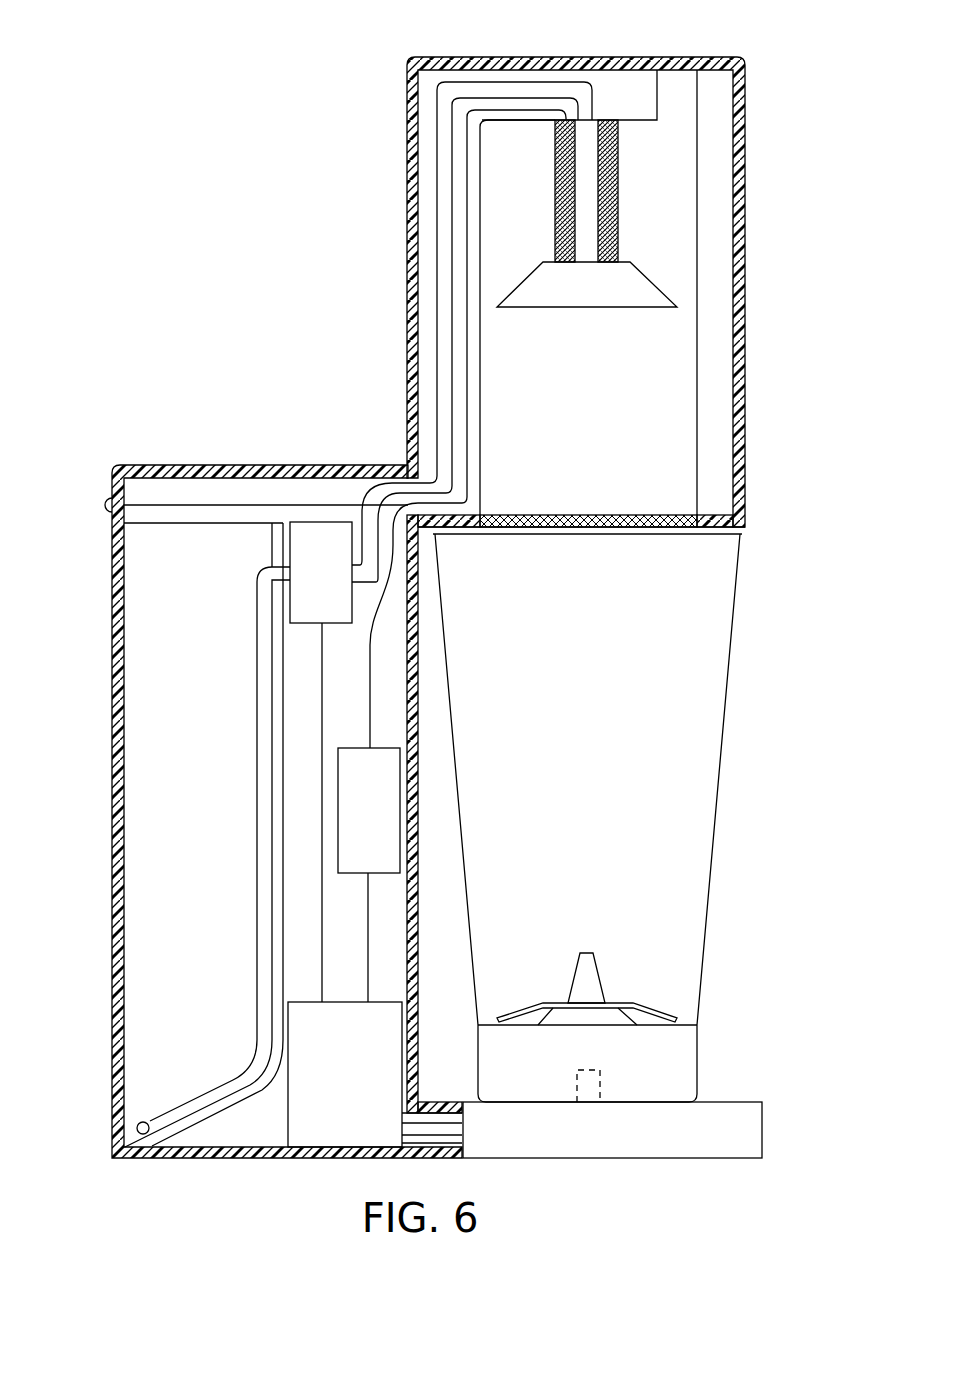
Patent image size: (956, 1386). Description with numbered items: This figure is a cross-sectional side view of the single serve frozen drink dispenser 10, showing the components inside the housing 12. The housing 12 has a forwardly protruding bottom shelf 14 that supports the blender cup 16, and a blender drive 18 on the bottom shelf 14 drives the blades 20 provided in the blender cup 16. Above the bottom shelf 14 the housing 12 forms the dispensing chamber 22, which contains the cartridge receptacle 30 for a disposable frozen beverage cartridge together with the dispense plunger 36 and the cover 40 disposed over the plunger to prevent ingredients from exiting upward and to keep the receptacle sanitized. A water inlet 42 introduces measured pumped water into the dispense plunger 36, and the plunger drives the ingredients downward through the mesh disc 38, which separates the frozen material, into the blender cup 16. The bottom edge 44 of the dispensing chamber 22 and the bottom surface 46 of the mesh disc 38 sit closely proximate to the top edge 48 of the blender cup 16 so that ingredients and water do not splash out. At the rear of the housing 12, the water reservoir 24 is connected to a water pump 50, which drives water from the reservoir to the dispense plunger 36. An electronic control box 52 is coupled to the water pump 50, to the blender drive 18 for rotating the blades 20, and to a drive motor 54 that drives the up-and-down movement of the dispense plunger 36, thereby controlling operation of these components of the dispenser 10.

The frozen drink dispenser 10 is at (256, 132).
The housing 12 is at (120, 462).
The bottom shelf 14 is at (763, 1128).
The blender cup 16 is at (727, 705).
The blender drive 18 is at (602, 1082).
The blades 20 is at (653, 1010).
The dispensing chamber 22 is at (722, 57).
The water reservoir 24 is at (165, 963).
The cartridge receptacle 30 is at (712, 347).
The dispense plunger 36 is at (620, 190).
The mesh disc 38 is at (640, 515).
The cover 40 is at (542, 287).
The water inlet 42 is at (600, 128).
The bottom edge 44 is at (742, 528).
The bottom surface 46 is at (665, 537).
The top edge 48 is at (450, 545).
The water pump 50 is at (318, 549).
The electronic control box 52 is at (318, 1130).
The drive motor 54 is at (360, 800).